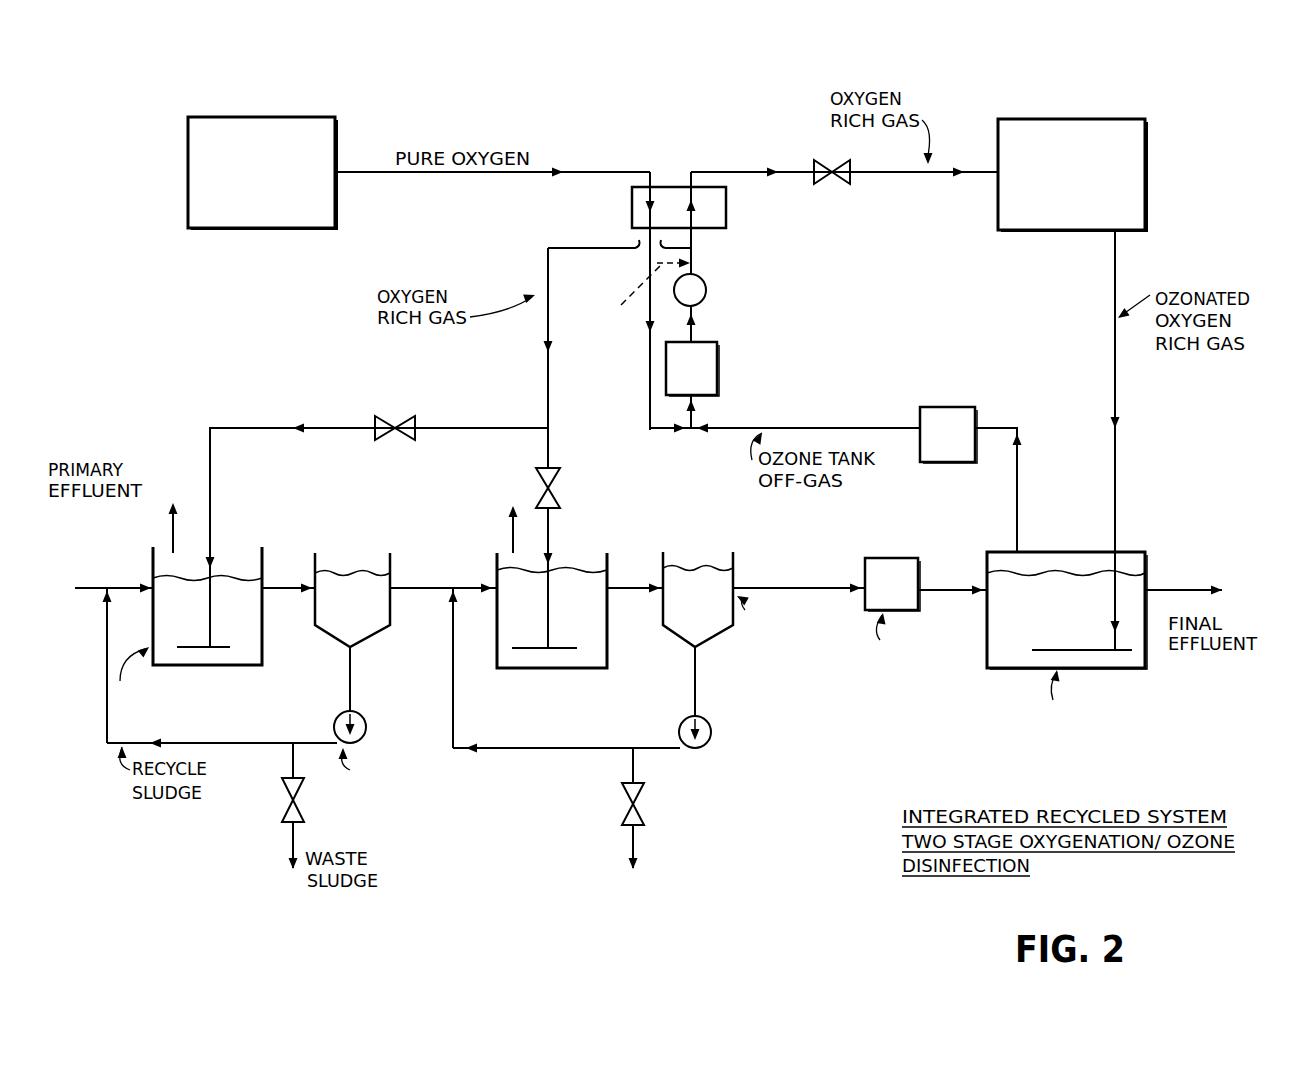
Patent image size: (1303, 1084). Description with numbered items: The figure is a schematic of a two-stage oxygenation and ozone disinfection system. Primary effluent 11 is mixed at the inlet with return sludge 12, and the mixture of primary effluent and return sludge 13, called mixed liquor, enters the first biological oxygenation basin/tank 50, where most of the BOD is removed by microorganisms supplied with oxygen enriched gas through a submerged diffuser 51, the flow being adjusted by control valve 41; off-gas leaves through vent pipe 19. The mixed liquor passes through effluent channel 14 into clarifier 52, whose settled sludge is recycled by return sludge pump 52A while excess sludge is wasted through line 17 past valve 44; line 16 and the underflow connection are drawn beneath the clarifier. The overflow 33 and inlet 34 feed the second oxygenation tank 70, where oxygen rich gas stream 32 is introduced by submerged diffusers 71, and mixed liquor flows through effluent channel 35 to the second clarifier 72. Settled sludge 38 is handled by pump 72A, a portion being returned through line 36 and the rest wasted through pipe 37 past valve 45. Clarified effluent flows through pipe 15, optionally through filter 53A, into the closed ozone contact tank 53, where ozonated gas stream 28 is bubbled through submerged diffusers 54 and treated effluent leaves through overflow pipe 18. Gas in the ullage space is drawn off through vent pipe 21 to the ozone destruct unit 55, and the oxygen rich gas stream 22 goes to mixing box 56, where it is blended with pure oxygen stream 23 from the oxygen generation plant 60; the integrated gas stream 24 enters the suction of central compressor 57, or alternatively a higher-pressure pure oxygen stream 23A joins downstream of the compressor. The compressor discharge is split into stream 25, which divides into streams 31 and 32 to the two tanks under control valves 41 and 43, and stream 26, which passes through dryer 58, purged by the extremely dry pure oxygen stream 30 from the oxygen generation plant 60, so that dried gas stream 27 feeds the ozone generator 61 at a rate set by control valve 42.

The primary effluent 11 is at (86, 587).
The return sludge 12 is at (107, 655).
The mixture of primary effluent and return sludge 13 is at (139, 586).
The effluent channel 14 is at (285, 585).
The pipe 15 is at (768, 587).
The intermediate clarifier underflow line 16 is at (350, 675).
The line 17 is at (289, 757).
The overflow pipe 18 is at (1176, 590).
The vent pipe 19 is at (173, 530).
The vent pipe 21 is at (1018, 516).
The oxygen rich gas stream 22 is at (692, 416).
The pure oxygen stream 23 is at (650, 410).
The pure oxygen stream (dotted line) 23A is at (621, 293).
The integrated gas stream 24 is at (692, 330).
The pipe / first gas stream 25 is at (554, 248).
The second gas stream 26 is at (693, 257).
The dried gas stream 27 is at (733, 172).
The gas stream 28 is at (1116, 481).
The pure oxygen stream 30 is at (593, 173).
The gas stream 31 is at (513, 427).
The gas stream 32 is at (549, 446).
The line from intermediate clarifier 33 is at (415, 587).
The inlet line to second basin 34 is at (473, 585).
The effluent channel 35 is at (630, 588).
The line 36 is at (453, 633).
The pipe 37 is at (637, 758).
The settled sludge 38 is at (698, 668).
The control valve 41 is at (384, 418).
The control valve 42 is at (840, 181).
The control valve 43 is at (556, 498).
The valve 44 is at (281, 793).
The valve 45 is at (642, 810).
The biological oxygenation basin/tank 50 is at (257, 603).
The submerged diffuser 51 is at (240, 636).
The clarifier 52 is at (380, 608).
The return sludge pump 52A is at (353, 712).
The ozone contact tank 53 is at (998, 605).
The filter 53A is at (910, 595).
The submerged diffusers 54 is at (1068, 649).
The ozone destruct unit 55 is at (960, 442).
The mixing box 56 is at (700, 381).
The central compressor 57 is at (700, 300).
The dryer 58 is at (682, 221).
The oxygen generation plant 60 is at (266, 206).
The ozone generator 61 is at (1076, 216).
The second oxygenation tank 70 is at (598, 614).
The submerged diffusers 71 is at (585, 641).
The second clarifier 72 is at (675, 605).
The pump 72A is at (716, 741).